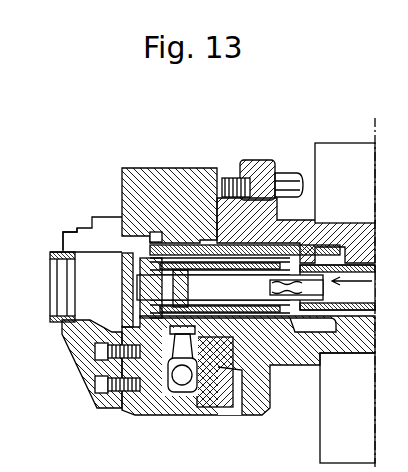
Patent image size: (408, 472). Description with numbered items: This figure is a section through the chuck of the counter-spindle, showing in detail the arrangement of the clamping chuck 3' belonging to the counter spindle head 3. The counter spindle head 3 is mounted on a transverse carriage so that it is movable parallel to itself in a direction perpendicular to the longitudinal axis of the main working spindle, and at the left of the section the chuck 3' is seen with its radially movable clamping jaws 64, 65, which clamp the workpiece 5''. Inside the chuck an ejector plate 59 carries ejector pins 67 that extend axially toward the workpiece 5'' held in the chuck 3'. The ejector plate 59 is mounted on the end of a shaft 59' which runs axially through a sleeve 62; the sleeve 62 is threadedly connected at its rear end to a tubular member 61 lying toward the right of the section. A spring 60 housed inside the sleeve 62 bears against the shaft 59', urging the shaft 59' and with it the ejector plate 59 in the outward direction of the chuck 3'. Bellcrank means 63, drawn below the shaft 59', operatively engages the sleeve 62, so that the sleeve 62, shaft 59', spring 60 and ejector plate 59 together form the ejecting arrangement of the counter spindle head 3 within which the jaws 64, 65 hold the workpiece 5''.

The counter spindle head 3 is at (345, 284).
The clamping chuck 3' is at (86, 219).
The workpiece 5'' is at (55, 271).
The ejector plate 59 is at (75, 364).
The shaft 59' is at (230, 288).
The spring 60 is at (198, 275).
The tubular member 61 is at (326, 330).
The sleeve 62 is at (211, 397).
The bellcrank means 63 is at (181, 386).
The clamping jaw 64 is at (76, 227).
The clamping jaw 65 is at (90, 337).
The ejector pins 67 is at (117, 253).